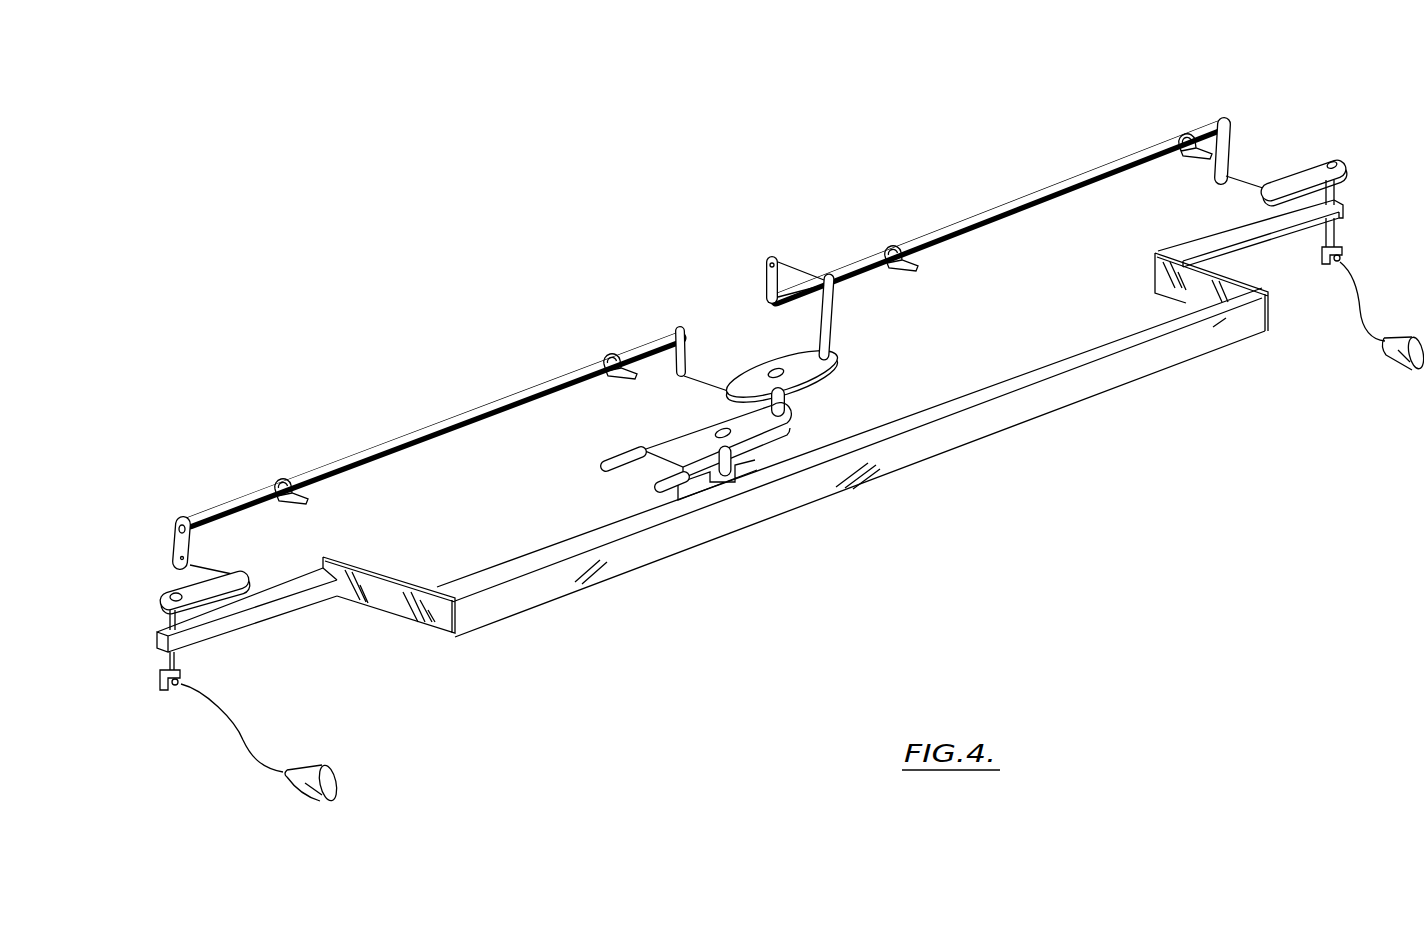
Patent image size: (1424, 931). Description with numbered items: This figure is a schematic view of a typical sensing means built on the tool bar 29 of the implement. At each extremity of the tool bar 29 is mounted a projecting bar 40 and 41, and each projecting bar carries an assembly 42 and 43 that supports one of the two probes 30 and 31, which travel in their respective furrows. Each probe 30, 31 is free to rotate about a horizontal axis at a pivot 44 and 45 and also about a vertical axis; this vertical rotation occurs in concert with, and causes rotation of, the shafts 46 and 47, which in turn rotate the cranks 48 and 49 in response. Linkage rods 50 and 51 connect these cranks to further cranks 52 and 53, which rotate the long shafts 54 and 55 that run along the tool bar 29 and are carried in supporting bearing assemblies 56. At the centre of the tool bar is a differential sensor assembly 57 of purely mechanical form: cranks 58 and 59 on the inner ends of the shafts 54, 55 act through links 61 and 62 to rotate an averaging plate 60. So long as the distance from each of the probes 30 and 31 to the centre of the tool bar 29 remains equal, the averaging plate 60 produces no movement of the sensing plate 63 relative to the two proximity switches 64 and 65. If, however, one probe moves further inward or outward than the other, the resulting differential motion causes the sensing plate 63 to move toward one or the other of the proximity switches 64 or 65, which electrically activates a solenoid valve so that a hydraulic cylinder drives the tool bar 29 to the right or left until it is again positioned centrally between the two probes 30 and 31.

The tool bar 29 is at (972, 426).
The probe 30 is at (1393, 364).
The probe 31 is at (340, 823).
The projecting bar 40 is at (1257, 238).
The projecting bar 41 is at (280, 607).
The assembly 42 is at (1283, 208).
The assembly 43 is at (220, 640).
The pivot 44 is at (1343, 256).
The pivot 45 is at (173, 690).
The shaft 46 is at (1336, 232).
The shaft 47 is at (172, 617).
The crank 48 is at (1301, 177).
The crank 49 is at (190, 590).
The linkage rod 50 is at (1247, 183).
The linkage rod 51 is at (200, 563).
The crank 52 is at (1228, 149).
The crank 53 is at (173, 521).
The shaft 54 is at (1010, 207).
The shaft 55 is at (415, 432).
The supporting bearing assembly 56 is at (284, 479).
The differential sensor assembly 57 is at (704, 411).
The crank 58 is at (769, 282).
The crank 59 is at (686, 351).
The averaging plate 60 is at (808, 367).
The link 61 is at (822, 278).
The link 62 is at (700, 380).
The sensing plate 63 is at (753, 420).
The proximity switch 64 is at (665, 492).
The proximity switch 65 is at (605, 454).